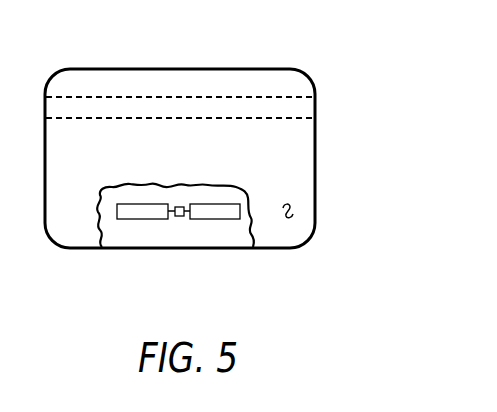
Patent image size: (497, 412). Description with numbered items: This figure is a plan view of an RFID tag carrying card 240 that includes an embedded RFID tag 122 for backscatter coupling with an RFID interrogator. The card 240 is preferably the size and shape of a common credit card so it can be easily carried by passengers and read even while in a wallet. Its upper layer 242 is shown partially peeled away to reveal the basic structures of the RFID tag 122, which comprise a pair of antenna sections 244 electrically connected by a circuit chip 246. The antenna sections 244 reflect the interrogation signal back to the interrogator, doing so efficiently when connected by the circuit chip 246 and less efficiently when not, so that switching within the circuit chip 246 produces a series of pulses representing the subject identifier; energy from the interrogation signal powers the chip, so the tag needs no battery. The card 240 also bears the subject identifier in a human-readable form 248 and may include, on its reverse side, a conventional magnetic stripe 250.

The RFID tag carrying card 240 is at (326, 172).
The magnetic stripe 250 is at (247, 93).
The human-readable form 248 is at (232, 152).
The upper layer 242 is at (293, 211).
The RFID tag 122 is at (232, 230).
The antenna sections 244 is at (140, 222).
The circuit chip 246 is at (180, 218).